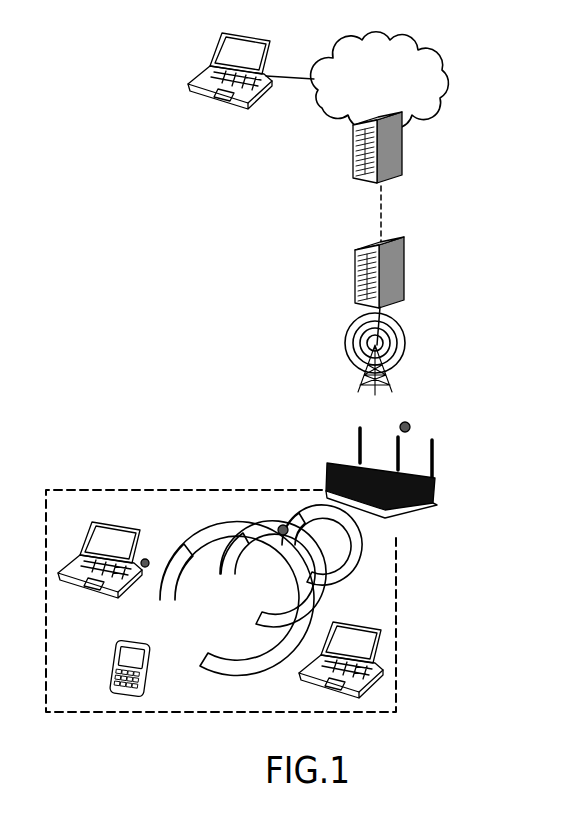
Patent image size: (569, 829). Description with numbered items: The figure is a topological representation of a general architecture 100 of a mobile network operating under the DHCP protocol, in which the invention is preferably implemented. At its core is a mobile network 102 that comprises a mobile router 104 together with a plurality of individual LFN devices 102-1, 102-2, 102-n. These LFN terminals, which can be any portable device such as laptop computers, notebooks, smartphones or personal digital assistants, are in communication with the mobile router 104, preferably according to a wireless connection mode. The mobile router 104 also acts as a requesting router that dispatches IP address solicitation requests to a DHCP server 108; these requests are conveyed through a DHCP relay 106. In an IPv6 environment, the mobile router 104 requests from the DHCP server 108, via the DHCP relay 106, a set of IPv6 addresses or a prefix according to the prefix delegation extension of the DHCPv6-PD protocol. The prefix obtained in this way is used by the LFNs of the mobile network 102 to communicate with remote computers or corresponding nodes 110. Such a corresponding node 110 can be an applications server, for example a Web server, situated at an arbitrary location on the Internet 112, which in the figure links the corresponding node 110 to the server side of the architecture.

The general architecture 100 is at (118, 243).
The mobile network 102 is at (397, 597).
The LFN device 102-1 is at (100, 520).
The LFN device 102-2 is at (120, 698).
The LFN device 102-n is at (368, 673).
The mobile router 104 is at (340, 466).
The DHCP relay 106 is at (352, 280).
The DHCP server 108 is at (352, 153).
The corresponding node 110 is at (197, 72).
The Internet 112 is at (442, 64).